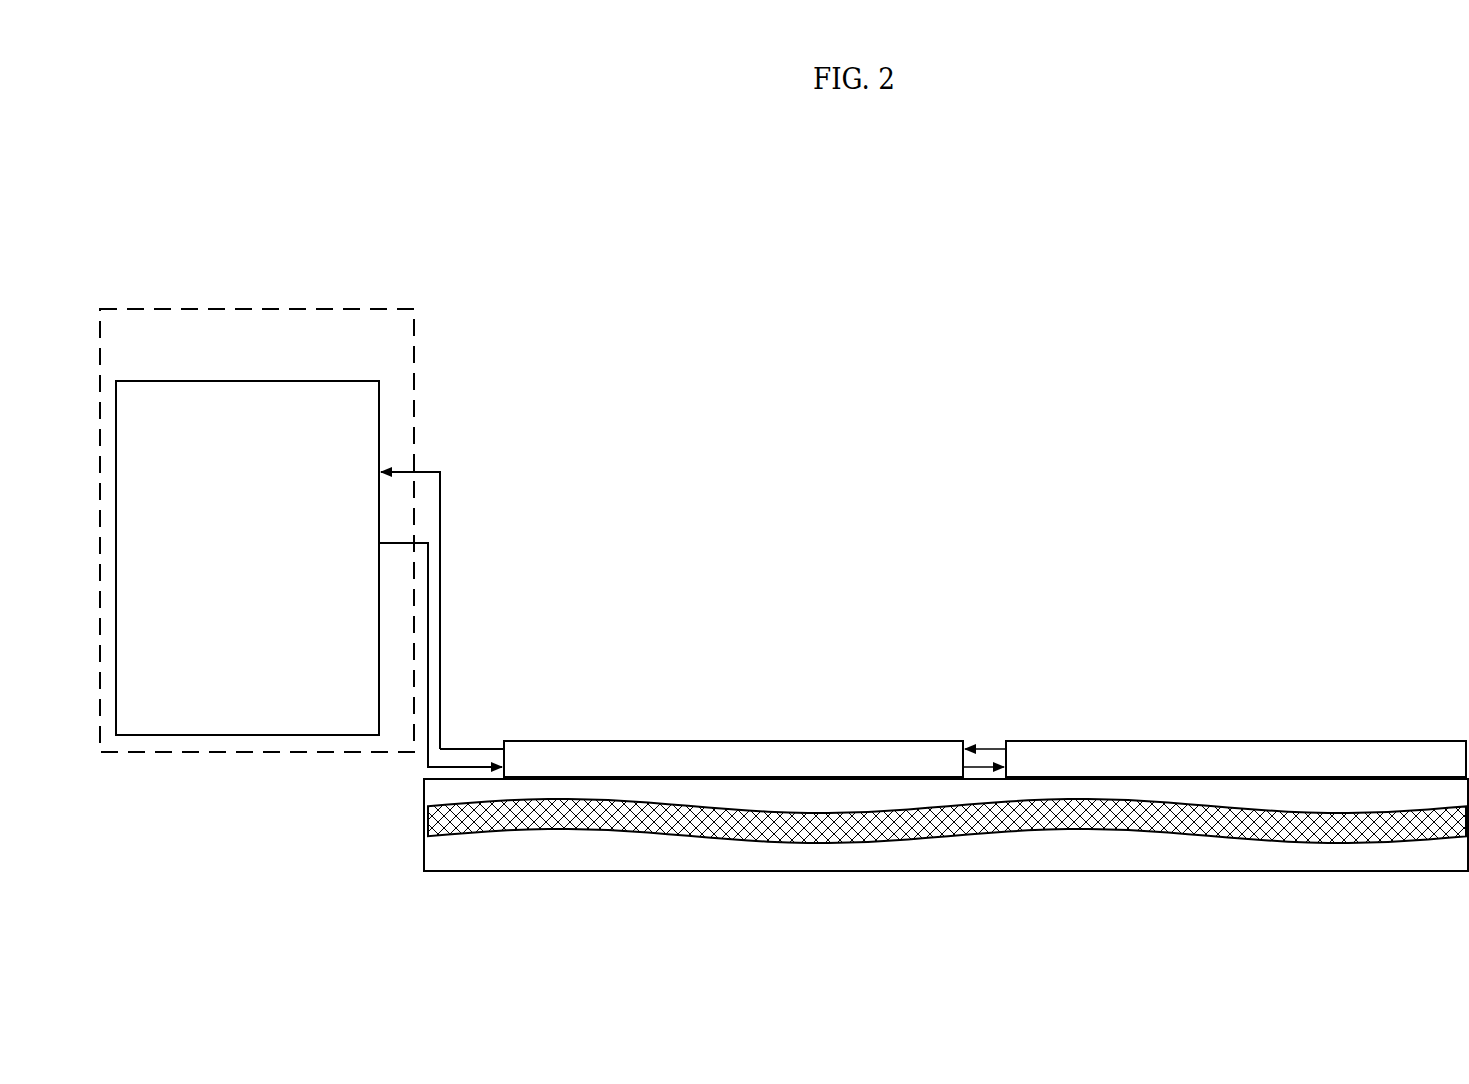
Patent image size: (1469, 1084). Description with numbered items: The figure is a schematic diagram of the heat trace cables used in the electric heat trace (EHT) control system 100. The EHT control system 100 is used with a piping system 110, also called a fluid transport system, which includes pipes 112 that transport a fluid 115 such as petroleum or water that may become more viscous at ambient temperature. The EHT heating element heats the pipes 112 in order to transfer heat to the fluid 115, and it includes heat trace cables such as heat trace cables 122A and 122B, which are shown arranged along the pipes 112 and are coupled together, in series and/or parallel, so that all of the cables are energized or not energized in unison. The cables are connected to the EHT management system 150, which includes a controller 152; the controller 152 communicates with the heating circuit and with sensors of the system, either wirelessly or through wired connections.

The electric heat trace (EHT) control system 100 is at (197, 262).
The EHT management system 150 is at (413, 309).
The controller 152 is at (191, 381).
The piping system 110 is at (1374, 648).
The heat trace cable 122A is at (862, 741).
The heat trace cable 122B is at (1148, 741).
The pipes 112 is at (1347, 871).
The fluid 115 is at (903, 840).